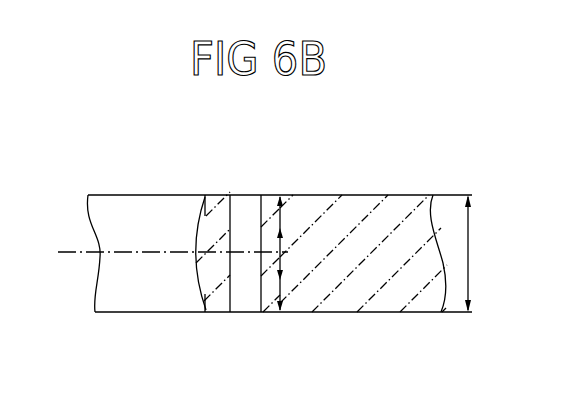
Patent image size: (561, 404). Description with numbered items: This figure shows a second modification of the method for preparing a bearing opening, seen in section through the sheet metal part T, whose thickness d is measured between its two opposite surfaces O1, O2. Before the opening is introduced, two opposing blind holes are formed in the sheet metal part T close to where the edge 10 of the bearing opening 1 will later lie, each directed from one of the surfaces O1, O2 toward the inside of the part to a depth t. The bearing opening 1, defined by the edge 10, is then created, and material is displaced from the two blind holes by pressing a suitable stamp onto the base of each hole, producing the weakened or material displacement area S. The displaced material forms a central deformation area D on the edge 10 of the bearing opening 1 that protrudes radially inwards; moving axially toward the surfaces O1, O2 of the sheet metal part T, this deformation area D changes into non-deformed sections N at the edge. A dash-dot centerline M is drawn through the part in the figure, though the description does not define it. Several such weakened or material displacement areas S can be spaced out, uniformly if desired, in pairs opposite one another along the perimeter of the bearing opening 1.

The bearing opening 1 is at (113, 297).
The edge of the bearing opening 10 is at (205, 215).
The non-deformed sections N is at (204, 196).
The central deformation area D is at (193, 255).
The weakened/material displacement area S is at (243, 210).
The blind hole depth t is at (297, 194).
The sheet metal part T is at (410, 220).
The first surface of the sheet metal part O1 is at (373, 195).
The second surface of the sheet metal part O2 is at (385, 312).
The thickness of the sheet metal part d is at (474, 253).
The optical axis M is at (80, 255).